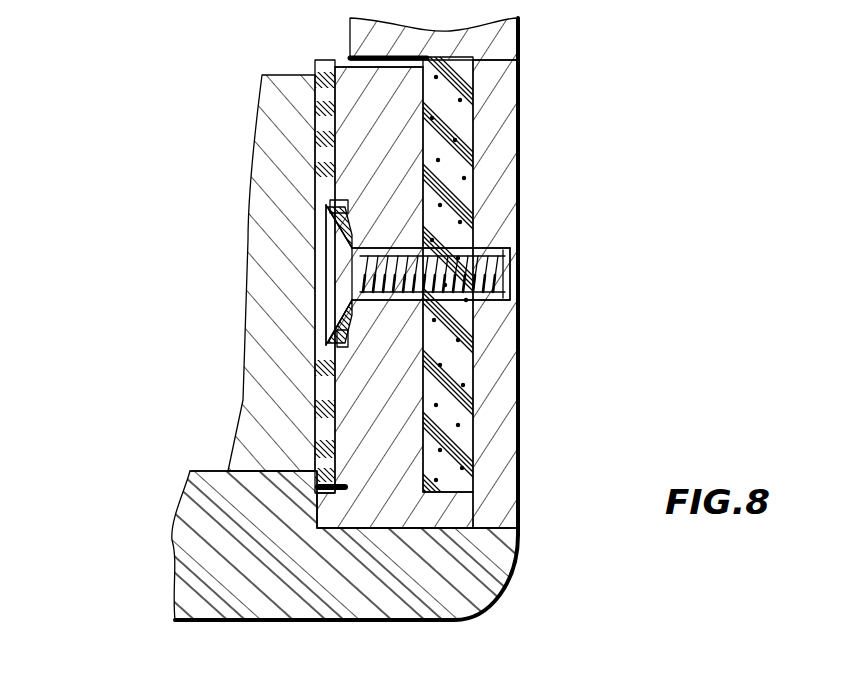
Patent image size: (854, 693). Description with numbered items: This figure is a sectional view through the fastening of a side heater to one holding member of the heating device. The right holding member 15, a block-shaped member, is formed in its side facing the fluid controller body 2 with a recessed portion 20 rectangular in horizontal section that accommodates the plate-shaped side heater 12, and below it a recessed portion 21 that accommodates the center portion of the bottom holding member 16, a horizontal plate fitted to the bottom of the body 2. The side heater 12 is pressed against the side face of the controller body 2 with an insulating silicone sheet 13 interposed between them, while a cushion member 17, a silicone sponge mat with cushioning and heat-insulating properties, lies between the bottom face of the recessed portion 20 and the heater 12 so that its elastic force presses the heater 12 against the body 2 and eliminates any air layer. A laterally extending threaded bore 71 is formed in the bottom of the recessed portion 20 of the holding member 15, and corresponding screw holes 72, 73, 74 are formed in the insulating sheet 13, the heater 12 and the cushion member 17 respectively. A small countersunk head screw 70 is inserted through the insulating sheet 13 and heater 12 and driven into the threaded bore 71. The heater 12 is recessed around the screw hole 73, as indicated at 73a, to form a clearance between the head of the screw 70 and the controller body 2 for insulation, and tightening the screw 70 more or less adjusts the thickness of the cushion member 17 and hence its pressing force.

The fluid controller body 2 is at (262, 221).
The side heater 12 is at (390, 428).
The insulating silicone sheet 13 is at (323, 100).
The right holding member 15 is at (521, 135).
The bottom holding member 16 is at (483, 552).
The cushion member 17 is at (518, 65).
The recessed portion 20 is at (352, 62).
The recessed portion 21 is at (317, 512).
The countersunk head screw 70 is at (335, 287).
The threaded bore 71 is at (518, 262).
The screw hole 72 is at (335, 262).
The screw hole 73 is at (378, 300).
The recessed surface around screw hole 73a is at (320, 207).
The screw hole 74 is at (505, 203).